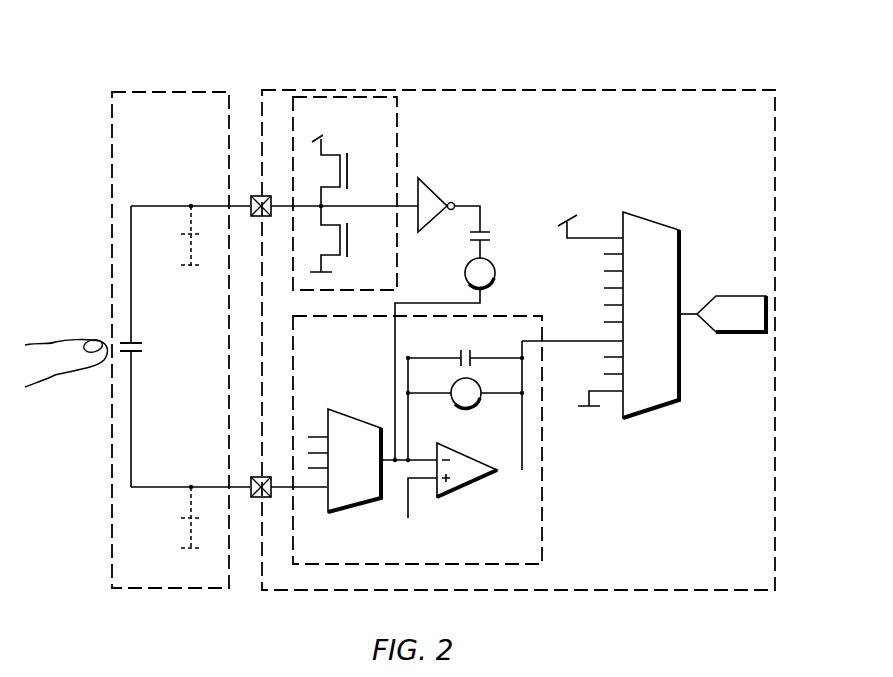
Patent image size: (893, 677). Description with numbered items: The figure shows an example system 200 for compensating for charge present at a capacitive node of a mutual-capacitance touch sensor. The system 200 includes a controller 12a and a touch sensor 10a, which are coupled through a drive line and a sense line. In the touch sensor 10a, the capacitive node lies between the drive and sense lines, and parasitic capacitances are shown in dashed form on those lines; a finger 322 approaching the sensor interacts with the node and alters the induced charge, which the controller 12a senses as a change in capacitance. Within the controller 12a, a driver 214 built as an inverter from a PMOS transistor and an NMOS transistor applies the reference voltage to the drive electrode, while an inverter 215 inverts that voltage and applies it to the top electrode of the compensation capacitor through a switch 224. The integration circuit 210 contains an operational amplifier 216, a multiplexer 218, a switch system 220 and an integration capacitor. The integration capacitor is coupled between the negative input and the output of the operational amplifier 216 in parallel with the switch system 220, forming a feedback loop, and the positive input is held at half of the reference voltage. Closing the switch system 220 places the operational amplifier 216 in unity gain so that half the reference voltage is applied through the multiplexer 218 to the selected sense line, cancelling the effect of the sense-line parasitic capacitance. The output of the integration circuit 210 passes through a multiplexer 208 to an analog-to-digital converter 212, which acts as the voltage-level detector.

The system 200 is at (650, 48).
The touch sensor 10a is at (164, 589).
The controller 12a is at (727, 590).
The finger 322 is at (90, 338).
The driver 214 is at (398, 153).
The inverter 215 is at (437, 192).
The switch 224 is at (496, 279).
The integration circuit 210 is at (542, 511).
The multiplexer 218 is at (350, 415).
The switch system 220 is at (466, 408).
The operational amplifier 216 is at (466, 488).
The multiplexer 208 is at (652, 218).
The analog-to-digital converter 212 is at (735, 294).